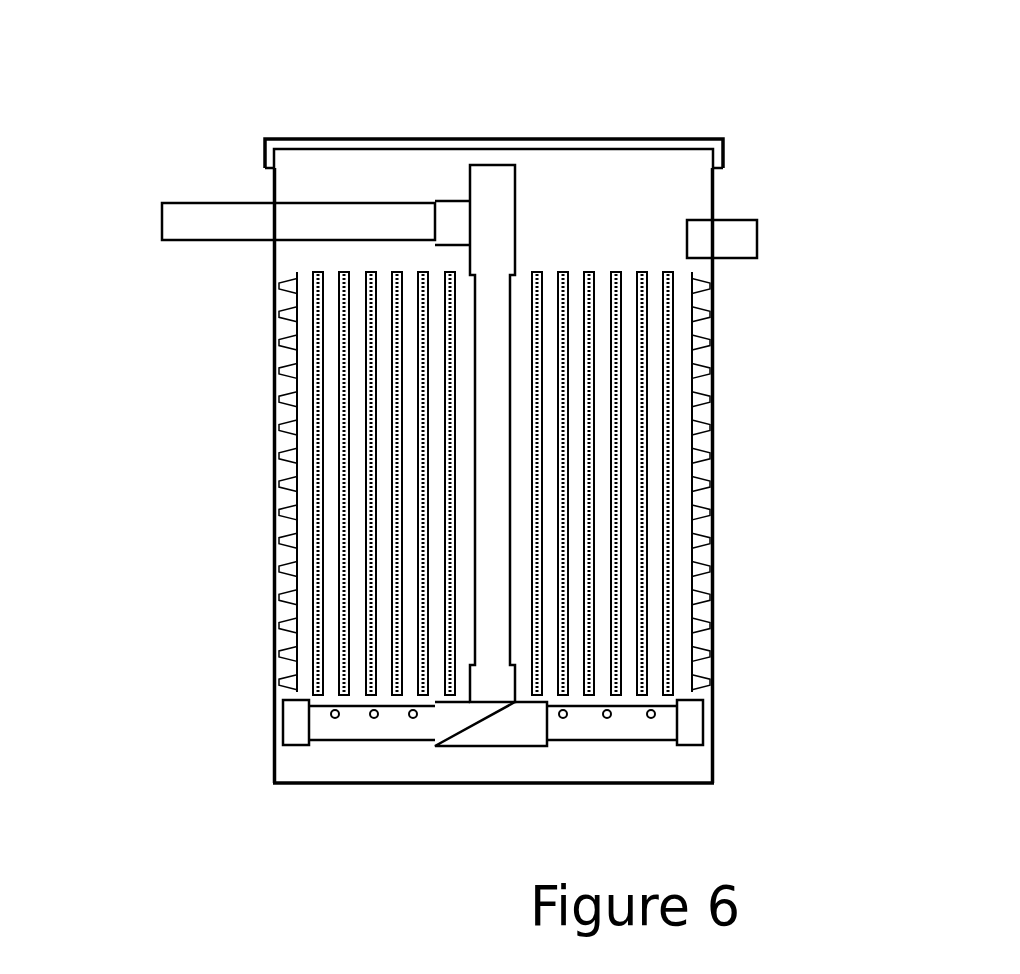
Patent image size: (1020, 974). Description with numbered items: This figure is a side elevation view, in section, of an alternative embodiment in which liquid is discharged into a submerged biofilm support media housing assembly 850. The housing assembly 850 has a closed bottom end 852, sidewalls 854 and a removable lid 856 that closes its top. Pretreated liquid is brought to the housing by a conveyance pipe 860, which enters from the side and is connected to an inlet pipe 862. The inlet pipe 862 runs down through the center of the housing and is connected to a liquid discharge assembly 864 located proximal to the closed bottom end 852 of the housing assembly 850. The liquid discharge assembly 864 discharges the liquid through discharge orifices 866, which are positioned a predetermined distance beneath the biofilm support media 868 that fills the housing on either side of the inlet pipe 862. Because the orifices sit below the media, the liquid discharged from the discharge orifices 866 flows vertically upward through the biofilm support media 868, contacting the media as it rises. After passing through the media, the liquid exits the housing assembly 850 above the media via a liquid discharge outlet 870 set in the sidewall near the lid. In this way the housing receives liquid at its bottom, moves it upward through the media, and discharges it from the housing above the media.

The submerged biofilm support media housing assembly 850 is at (140, 156).
The closed bottom end 852 is at (310, 785).
The sidewalls 854 is at (715, 413).
The removable lid 856 is at (536, 139).
The conveyance pipe 860 is at (187, 240).
The inlet pipe 862 is at (474, 397).
The liquid discharge assembly 864 is at (624, 732).
The discharge orifices 866 is at (330, 713).
The biofilm support media 868 is at (348, 522).
The liquid discharge outlet 870 is at (732, 218).